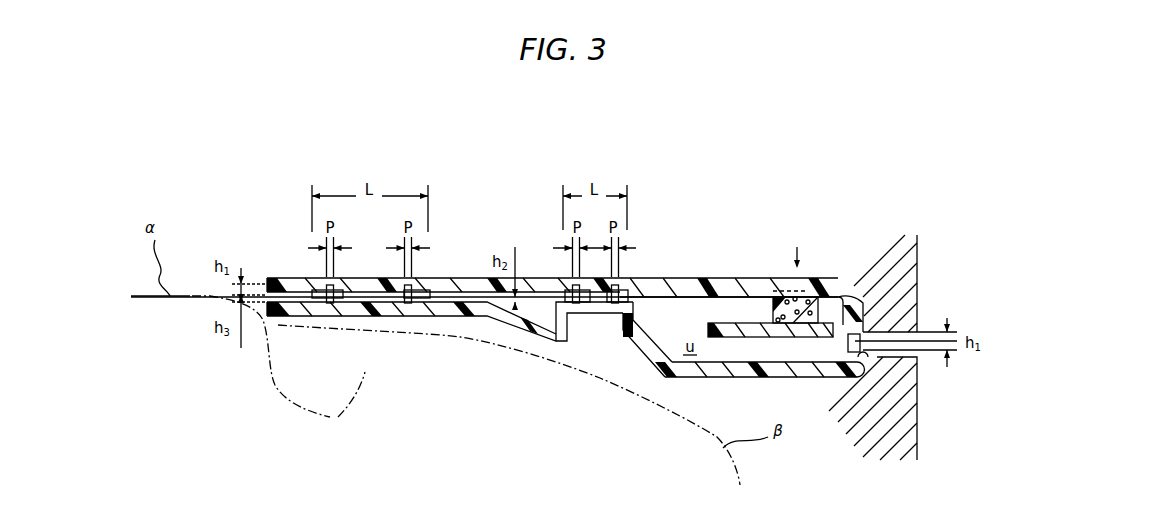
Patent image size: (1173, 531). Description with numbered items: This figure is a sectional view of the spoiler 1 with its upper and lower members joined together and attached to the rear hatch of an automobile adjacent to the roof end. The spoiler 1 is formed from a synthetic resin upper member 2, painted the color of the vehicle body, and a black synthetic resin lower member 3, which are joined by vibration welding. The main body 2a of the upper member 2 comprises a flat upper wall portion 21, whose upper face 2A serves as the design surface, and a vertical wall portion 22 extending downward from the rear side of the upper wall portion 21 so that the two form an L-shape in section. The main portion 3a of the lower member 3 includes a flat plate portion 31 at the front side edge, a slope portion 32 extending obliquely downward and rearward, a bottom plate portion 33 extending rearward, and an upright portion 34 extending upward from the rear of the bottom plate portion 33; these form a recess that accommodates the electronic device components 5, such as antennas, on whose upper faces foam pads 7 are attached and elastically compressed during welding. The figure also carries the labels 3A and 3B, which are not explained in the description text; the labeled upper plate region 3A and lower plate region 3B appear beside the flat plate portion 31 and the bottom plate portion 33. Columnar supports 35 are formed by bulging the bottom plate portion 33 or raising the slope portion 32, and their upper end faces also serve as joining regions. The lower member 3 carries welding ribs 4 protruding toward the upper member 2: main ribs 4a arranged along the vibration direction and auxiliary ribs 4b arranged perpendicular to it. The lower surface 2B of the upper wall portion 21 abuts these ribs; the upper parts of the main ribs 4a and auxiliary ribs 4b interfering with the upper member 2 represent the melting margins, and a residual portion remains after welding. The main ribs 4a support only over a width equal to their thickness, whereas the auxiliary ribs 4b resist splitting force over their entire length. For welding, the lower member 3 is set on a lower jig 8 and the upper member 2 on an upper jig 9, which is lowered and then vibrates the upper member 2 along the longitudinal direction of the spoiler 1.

The spoiler 1 is at (702, 175).
The upper member 2 is at (770, 277).
The main body 2a is at (818, 231).
The upper face 2A is at (720, 277).
The lower surface 2B is at (698, 302).
The lower member 3 is at (450, 300).
The main portion 3a is at (450, 272).
The upper guide plate 3A is at (535, 292).
The lower plate portion 3B is at (760, 406).
The welding ribs 4 is at (330, 304).
The main ribs 4a is at (587, 352).
The auxiliary ribs 4b is at (385, 304).
The electronic device components 5 is at (727, 322).
The foam pads 7 is at (820, 305).
The lower jig 8 is at (917, 420).
The upper jig 9 is at (917, 248).
The upper wall portion 21 is at (818, 231).
The vertical wall portion 22 is at (866, 315).
The flat plate portion 31 is at (450, 272).
The slope portion 32 is at (484, 230).
The bottom plate portion 33 is at (713, 378).
The upright portion 34 is at (866, 359).
The columnar supports 35 is at (632, 328).